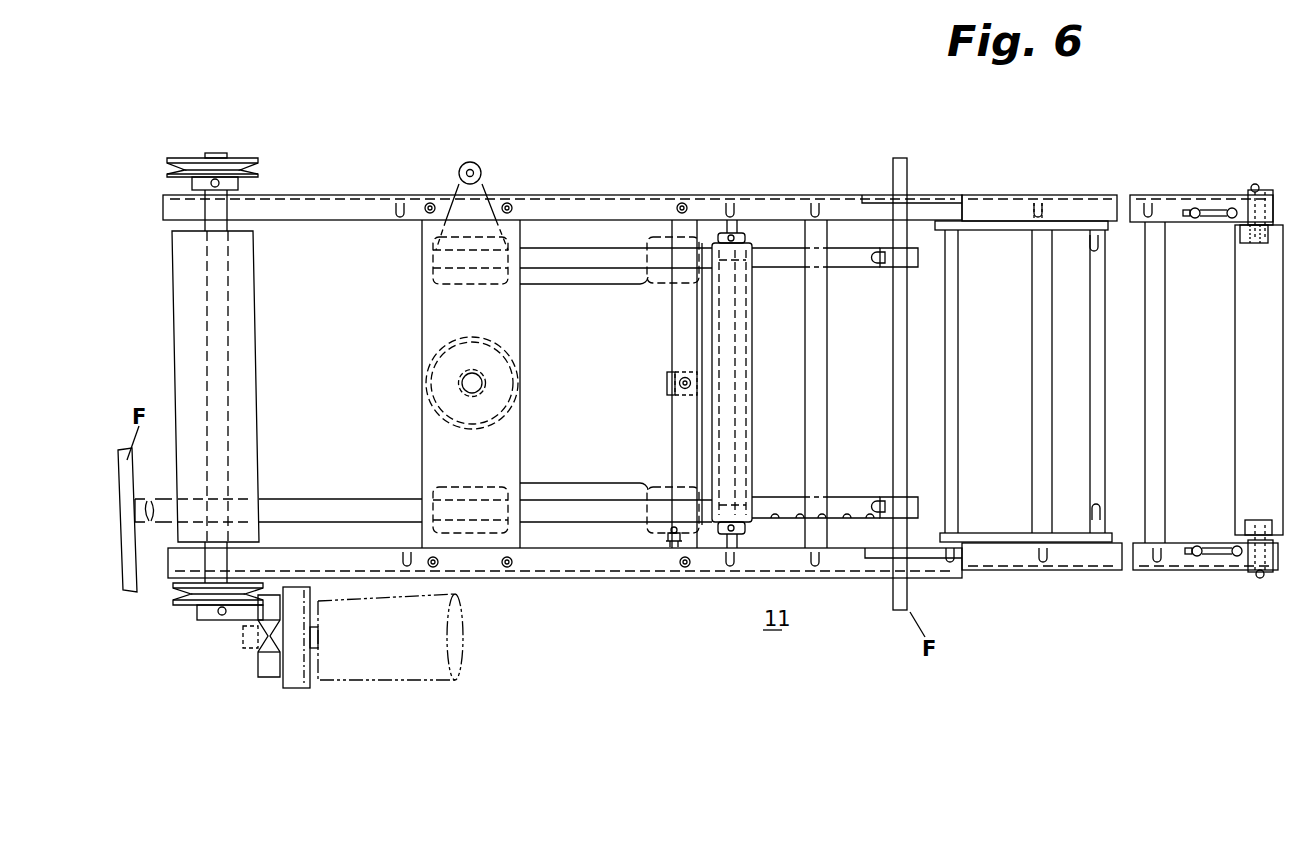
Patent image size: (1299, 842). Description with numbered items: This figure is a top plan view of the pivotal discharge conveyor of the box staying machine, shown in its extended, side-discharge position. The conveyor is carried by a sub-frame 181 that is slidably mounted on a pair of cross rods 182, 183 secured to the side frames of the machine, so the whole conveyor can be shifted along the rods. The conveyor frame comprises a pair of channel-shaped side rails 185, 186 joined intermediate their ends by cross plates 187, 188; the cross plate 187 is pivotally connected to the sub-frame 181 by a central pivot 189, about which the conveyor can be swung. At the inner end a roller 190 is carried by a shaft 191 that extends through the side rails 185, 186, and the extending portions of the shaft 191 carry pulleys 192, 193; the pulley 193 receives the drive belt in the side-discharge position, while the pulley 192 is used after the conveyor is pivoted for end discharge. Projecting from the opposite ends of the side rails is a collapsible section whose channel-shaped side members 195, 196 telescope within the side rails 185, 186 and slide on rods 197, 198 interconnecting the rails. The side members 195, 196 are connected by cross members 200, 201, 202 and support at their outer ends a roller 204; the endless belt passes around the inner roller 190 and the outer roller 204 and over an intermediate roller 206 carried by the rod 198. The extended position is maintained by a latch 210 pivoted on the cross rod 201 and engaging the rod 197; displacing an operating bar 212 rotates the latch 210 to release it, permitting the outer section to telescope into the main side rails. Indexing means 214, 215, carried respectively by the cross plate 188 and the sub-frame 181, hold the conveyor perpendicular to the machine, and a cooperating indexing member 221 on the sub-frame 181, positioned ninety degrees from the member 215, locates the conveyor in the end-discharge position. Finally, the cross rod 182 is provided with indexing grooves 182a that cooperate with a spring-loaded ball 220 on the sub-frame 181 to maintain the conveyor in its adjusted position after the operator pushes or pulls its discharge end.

The sub-frame 181 is at (442, 303).
The rod 182 is at (388, 513).
The indexing grooves 182a is at (776, 512).
The rod 183 is at (862, 259).
The side rail 185 is at (590, 200).
The side rail 186 is at (582, 562).
The cross plate 187 is at (425, 237).
The cross plate 188 is at (683, 300).
The central pivot 189 is at (462, 383).
The roller 190 is at (248, 462).
The shaft 191 is at (208, 226).
The pulley 192 is at (235, 157).
The pulley 193 is at (183, 612).
The side member 195 is at (1018, 192).
The side member 196 is at (1140, 570).
The rod 197 is at (947, 340).
The rod 198 is at (733, 231).
The cross member 200 is at (820, 398).
The cross member 201 is at (1042, 437).
The cross member 202 is at (1155, 294).
The roller 204 is at (1250, 380).
The intermediate roller 206 is at (737, 345).
The latch 210 is at (988, 542).
The operating bar 212 is at (1097, 460).
The indexing means 214 is at (680, 386).
The indexing means 215 is at (668, 376).
The spring-loaded ball 220 is at (660, 540).
The indexing member 221 is at (480, 174).